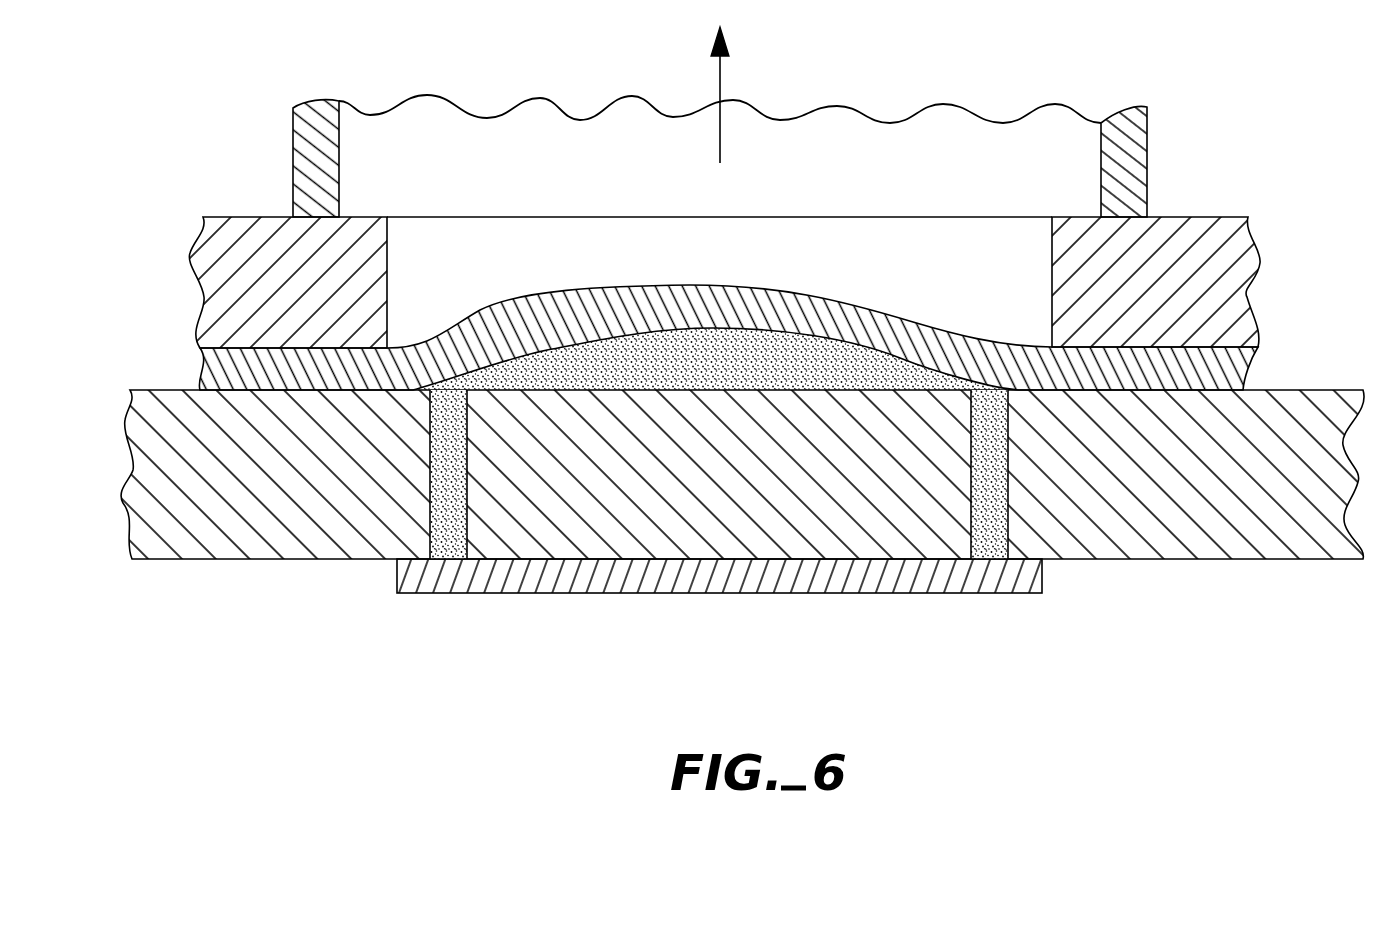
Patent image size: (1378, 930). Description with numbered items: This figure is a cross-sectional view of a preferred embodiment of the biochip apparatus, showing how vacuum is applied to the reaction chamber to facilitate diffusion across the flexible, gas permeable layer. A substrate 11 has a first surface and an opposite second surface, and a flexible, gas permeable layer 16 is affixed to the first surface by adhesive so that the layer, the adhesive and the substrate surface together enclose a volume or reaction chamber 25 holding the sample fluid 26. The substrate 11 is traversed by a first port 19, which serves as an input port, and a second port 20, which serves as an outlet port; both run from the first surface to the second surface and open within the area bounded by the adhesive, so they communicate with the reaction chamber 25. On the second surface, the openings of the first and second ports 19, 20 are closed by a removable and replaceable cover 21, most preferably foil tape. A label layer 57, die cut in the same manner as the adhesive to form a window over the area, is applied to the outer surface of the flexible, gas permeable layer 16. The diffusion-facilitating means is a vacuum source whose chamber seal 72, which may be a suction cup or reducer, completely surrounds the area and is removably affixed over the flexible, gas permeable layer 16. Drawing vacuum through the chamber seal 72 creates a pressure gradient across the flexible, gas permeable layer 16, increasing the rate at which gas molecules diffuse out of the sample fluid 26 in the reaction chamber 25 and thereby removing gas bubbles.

The substrate 11 is at (1282, 566).
The flexible, gas permeable layer 16 is at (1253, 362).
The first port 19 is at (430, 537).
The second port 20 is at (990, 538).
The removable and replaceable cover 21 is at (457, 594).
The reaction chamber 25 is at (763, 366).
The sample fluid 26 is at (843, 364).
The label layer 57 is at (1253, 234).
The chamber seal 72 is at (1148, 130).